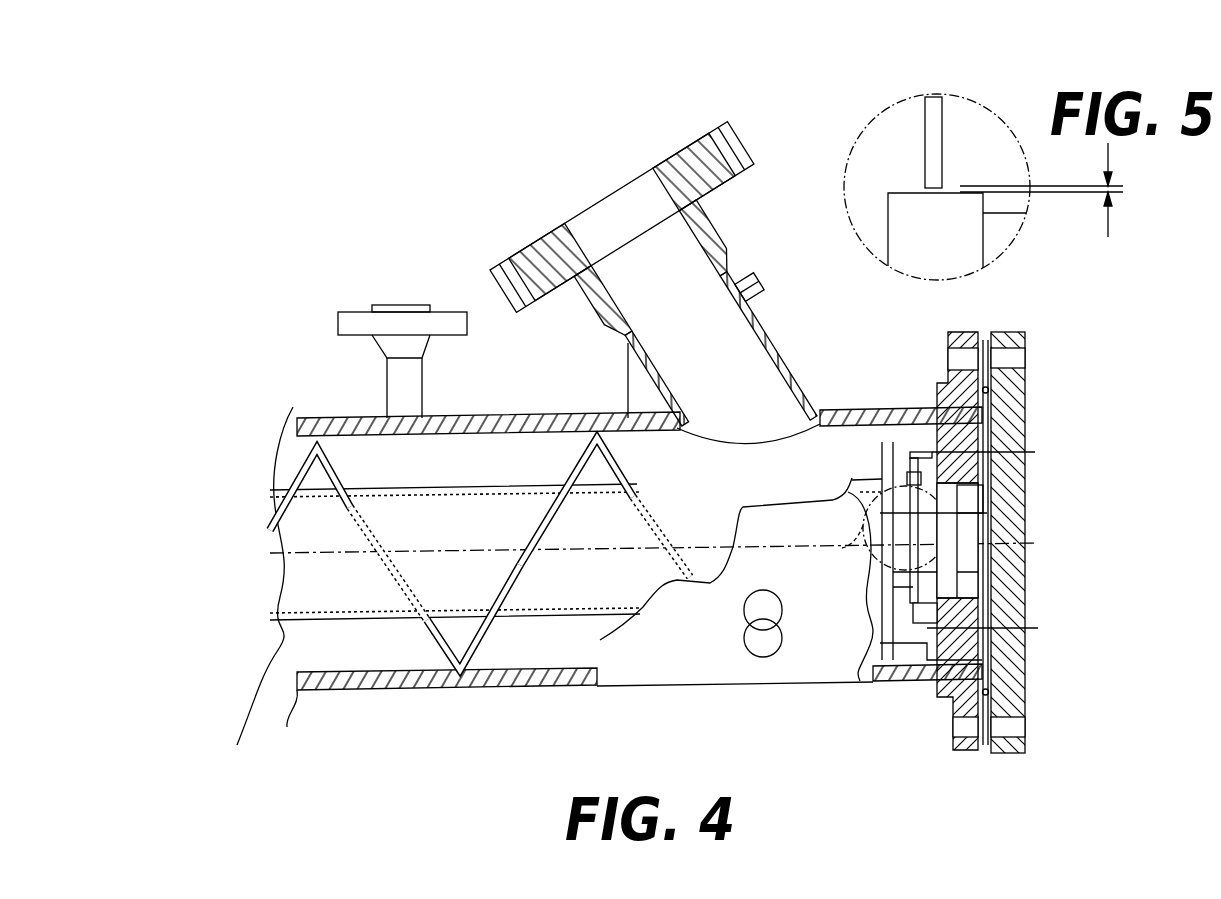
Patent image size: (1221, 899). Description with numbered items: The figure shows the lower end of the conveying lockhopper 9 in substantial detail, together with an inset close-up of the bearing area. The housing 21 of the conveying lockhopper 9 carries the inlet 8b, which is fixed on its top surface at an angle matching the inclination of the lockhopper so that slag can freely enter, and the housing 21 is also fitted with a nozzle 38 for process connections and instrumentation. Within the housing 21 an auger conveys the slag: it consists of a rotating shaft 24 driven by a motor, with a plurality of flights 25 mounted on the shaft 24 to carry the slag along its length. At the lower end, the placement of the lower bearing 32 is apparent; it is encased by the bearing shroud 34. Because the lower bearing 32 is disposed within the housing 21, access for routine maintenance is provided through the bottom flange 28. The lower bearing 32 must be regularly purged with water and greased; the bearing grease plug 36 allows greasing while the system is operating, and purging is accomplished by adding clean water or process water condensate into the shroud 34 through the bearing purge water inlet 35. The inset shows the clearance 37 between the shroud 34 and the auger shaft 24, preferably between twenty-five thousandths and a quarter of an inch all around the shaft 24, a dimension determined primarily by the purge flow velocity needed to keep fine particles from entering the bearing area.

In FIG. 4, the inlet 8b is at (626, 152).
In FIG. 4, the conveying lockhopper 9 is at (334, 711).
In FIG. 4, the housing 21 is at (427, 690).
In FIG. 4, the shaft 24 is at (259, 592).
In FIG. 5, the shaft 24 is at (957, 230).
In FIG. 4, the flights 25 is at (500, 690).
In FIG. 4, the bottom flange 28 is at (1015, 332).
In FIG. 4, the lower bearing 32 is at (940, 590).
In FIG. 4, the bearing shroud 34 is at (882, 642).
In FIG. 5, the bearing shroud 34 is at (930, 95).
In FIG. 4, the bearing purge water inlet 35 is at (1038, 628).
In FIG. 4, the bearing grease plug 36 is at (1035, 452).
In FIG. 5, the clearance 37 is at (1112, 222).
In FIG. 4, the nozzles 38 is at (330, 350).